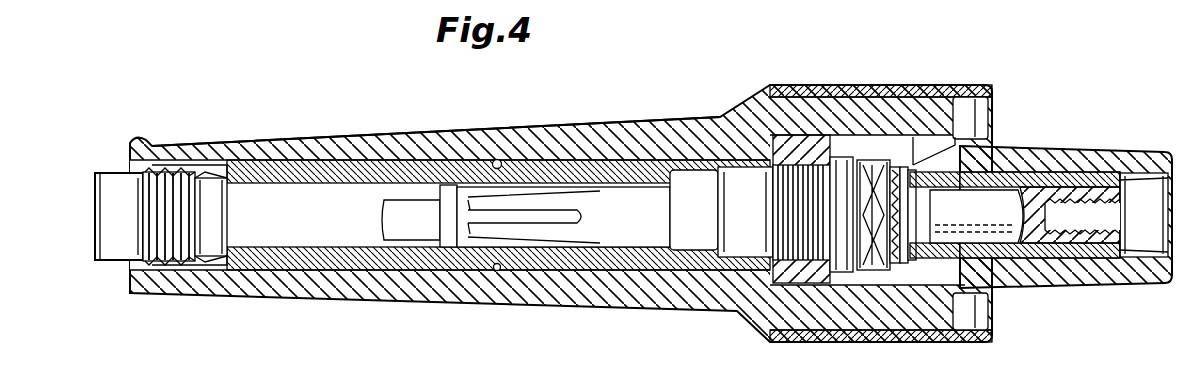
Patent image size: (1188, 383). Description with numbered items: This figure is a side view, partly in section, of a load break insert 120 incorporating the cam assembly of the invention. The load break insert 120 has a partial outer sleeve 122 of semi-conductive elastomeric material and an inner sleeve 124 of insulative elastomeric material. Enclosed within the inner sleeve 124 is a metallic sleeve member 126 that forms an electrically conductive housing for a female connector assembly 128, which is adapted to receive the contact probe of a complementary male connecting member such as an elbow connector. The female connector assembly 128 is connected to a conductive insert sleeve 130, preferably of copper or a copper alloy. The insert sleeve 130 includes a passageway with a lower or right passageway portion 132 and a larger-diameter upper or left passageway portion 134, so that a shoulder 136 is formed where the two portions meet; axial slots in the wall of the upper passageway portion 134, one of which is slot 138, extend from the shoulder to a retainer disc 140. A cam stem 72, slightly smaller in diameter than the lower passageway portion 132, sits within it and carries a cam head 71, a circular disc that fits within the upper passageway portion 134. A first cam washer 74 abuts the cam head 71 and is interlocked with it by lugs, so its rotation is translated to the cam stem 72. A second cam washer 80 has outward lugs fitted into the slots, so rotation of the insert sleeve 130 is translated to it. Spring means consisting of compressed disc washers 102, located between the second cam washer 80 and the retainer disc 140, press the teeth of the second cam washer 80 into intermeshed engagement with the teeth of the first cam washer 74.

The load break insert 120 is at (583, 120).
The partial outer sleeve 122 is at (858, 85).
The inner sleeve 124 is at (940, 94).
The metallic sleeve member 126 is at (603, 168).
The female connector assembly 128 is at (499, 159).
The insert sleeve 130 is at (962, 149).
The lower passageway portion 132 is at (1046, 236).
The upper passageway portion 134 is at (880, 270).
The shoulder 136 is at (986, 306).
The slot 138 is at (887, 160).
The retainer disc 140 is at (868, 160).
The second cam washer 80 is at (904, 160).
The cam stem 72 is at (1060, 141).
The cam head 71 is at (926, 258).
The first cam washer 74 is at (905, 266).
The disc washers 102 is at (857, 217).